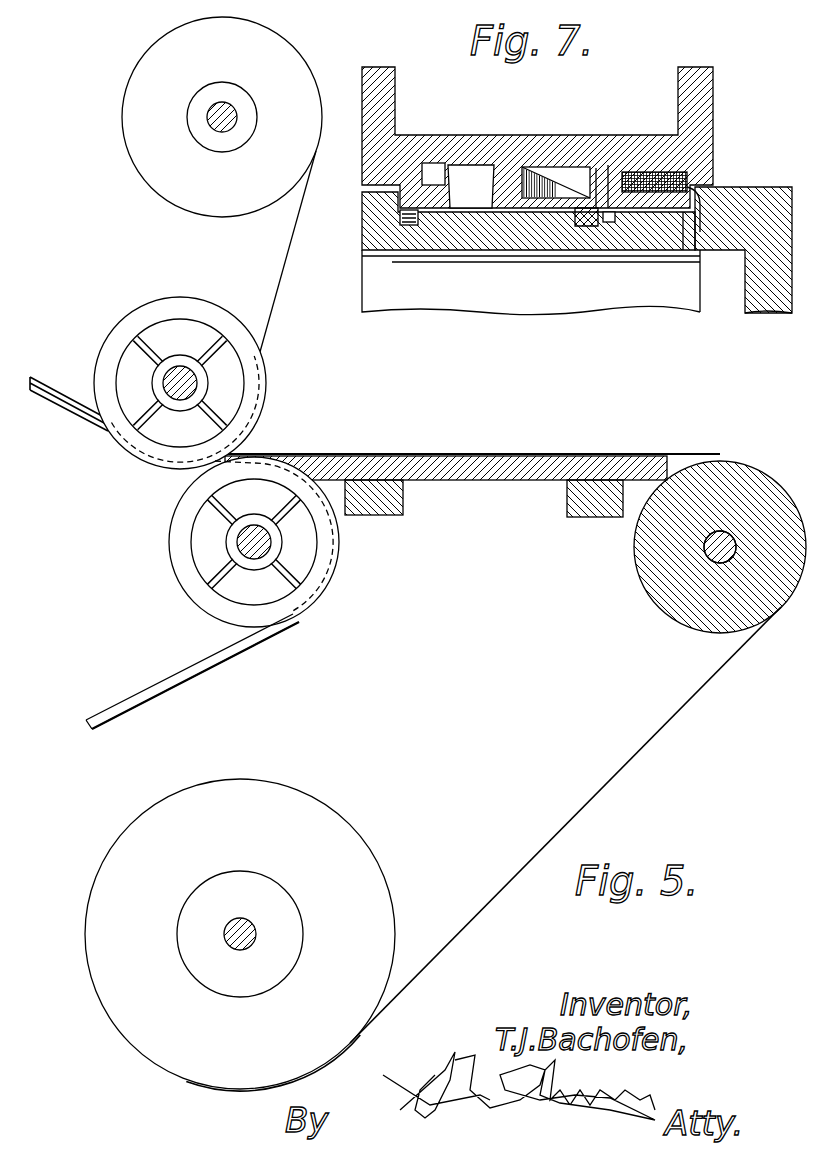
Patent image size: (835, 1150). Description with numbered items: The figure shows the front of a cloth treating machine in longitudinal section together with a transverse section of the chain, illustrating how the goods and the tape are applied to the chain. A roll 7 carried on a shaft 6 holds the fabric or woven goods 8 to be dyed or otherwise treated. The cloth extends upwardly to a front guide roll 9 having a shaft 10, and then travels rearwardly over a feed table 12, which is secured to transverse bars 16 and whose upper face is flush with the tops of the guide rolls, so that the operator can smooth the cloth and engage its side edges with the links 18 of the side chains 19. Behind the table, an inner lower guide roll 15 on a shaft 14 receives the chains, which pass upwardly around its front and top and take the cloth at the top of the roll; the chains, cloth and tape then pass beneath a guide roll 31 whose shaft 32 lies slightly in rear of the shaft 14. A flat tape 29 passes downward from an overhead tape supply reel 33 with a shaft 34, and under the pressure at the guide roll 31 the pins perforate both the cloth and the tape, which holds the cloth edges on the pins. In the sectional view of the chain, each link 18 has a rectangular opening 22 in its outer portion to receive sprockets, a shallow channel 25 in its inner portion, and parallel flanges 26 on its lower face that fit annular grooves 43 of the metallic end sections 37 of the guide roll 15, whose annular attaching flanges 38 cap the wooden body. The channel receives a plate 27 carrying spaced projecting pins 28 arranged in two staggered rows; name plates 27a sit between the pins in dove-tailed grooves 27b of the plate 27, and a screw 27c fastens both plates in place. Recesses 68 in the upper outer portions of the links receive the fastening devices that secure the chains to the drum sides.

In FIG. 5, the shaft 6 is at (223, 928).
In FIG. 5, the roll 7 is at (220, 984).
In FIG. 5, the fabric or woven goods 8 is at (596, 794).
In FIG. 5, the front guide roll 9 is at (693, 613).
In FIG. 5, the shaft 10 is at (713, 560).
In FIG. 5, the feed table 12 is at (492, 463).
In FIG. 5, the shaft 14 is at (238, 540).
In FIG. 7, the inner lower guide roll 15 is at (448, 311).
In FIG. 5, the inner lower guide roll 15 is at (201, 607).
In FIG. 5, the transverse bars 16 is at (565, 518).
In FIG. 7, the links 18 is at (507, 163).
In FIG. 5, the side chains 19 is at (205, 662).
In FIG. 7, the rectangular opening 22 is at (452, 178).
In FIG. 7, the shallow channel 25 is at (713, 242).
In FIG. 7, the parallel flanges 26 is at (398, 216).
In FIG. 7, the plate 27 is at (683, 252).
In FIG. 7, the name plates 27a is at (630, 212).
In FIG. 7, the dove-tailed grooves 27b is at (598, 168).
In FIG. 7, the screw 27c is at (653, 228).
In FIG. 7, the projecting pins 28 is at (688, 176).
In FIG. 7, the flat tape 29 is at (645, 168).
In FIG. 5, the flat tape 29 is at (273, 303).
In FIG. 7, the guide roll 31 is at (703, 93).
In FIG. 5, the guide roll 31 is at (253, 403).
In FIG. 5, the shaft 32 is at (162, 380).
In FIG. 5, the tape supply reel 33 is at (297, 63).
In FIG. 5, the shaft 34 is at (207, 121).
In FIG. 7, the metallic end sections 37 is at (551, 240).
In FIG. 7, the annular attaching flanges 38 is at (777, 197).
In FIG. 7, the annular grooves 43 is at (413, 224).
In FIG. 7, the recesses 68 is at (432, 168).